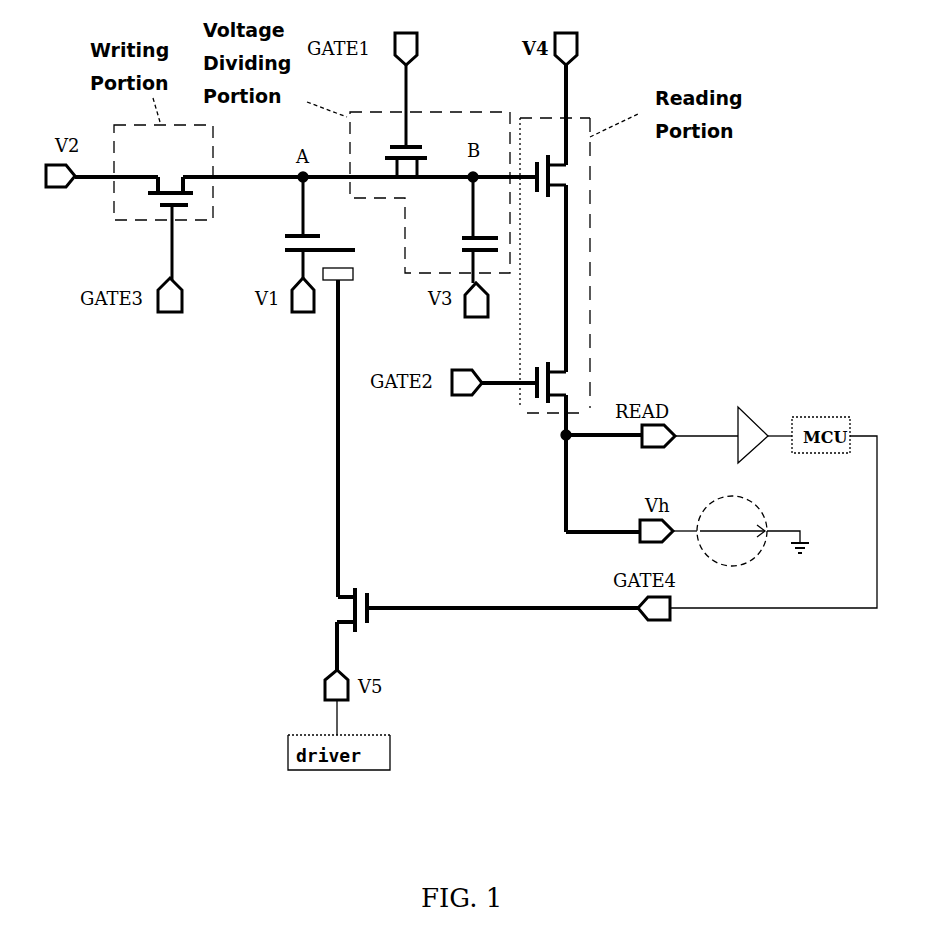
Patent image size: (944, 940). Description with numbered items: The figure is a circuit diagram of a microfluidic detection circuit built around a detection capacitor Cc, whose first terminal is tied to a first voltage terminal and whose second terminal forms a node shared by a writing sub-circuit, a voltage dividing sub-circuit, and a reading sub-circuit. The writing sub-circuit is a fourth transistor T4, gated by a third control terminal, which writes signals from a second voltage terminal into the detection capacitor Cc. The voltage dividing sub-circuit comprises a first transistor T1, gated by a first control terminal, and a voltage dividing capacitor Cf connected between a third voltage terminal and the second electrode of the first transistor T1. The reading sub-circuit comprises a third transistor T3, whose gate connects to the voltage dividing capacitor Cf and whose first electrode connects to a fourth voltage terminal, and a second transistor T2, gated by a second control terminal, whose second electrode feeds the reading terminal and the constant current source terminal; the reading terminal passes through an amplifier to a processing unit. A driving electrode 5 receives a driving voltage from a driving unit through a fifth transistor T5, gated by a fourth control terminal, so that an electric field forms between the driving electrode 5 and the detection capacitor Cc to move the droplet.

The driving electrode 5 is at (348, 282).
The first transistor T1 is at (395, 121).
The second transistor T2 is at (524, 369).
The third transistor T3 is at (547, 164).
The fourth transistor T4 is at (165, 213).
The fifth transistor T5 is at (369, 629).
The detection capacitor Cc is at (301, 228).
The voltage dividing capacitor Cf is at (460, 230).